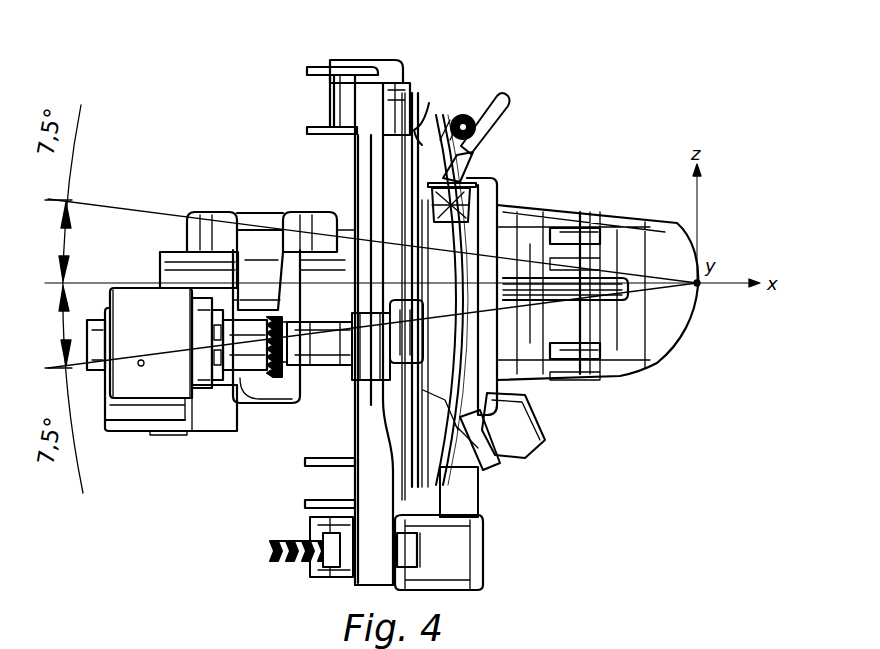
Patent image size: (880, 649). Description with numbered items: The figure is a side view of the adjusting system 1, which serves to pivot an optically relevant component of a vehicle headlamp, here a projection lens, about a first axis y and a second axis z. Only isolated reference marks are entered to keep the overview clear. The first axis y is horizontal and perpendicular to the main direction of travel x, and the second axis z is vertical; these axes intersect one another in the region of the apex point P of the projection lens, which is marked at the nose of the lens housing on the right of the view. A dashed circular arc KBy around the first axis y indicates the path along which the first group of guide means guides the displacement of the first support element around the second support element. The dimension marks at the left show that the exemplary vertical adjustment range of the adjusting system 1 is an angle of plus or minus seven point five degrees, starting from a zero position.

The adjusting system 1 is at (206, 58).
The apex point P is at (700, 287).
The circular arc KBy is at (628, 566).